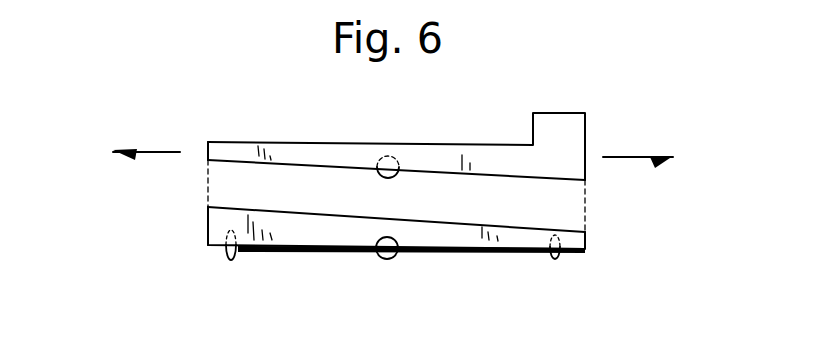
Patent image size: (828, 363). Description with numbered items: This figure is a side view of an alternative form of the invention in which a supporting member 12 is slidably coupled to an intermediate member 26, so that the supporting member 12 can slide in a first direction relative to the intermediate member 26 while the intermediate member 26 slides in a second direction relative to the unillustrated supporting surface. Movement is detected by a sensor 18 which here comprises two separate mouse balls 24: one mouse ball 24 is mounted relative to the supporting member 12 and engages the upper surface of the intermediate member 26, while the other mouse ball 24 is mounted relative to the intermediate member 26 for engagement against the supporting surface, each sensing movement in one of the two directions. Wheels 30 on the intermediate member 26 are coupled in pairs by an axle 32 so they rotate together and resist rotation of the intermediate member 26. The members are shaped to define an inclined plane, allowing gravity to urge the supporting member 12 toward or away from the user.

The supporting member 12 is at (240, 142).
The sensor 18 is at (372, 195).
The mouse ball 24 is at (398, 180).
The intermediate member 26 is at (207, 223).
The rivets / fasteners 30 is at (228, 258).
The axle 32 is at (273, 252).